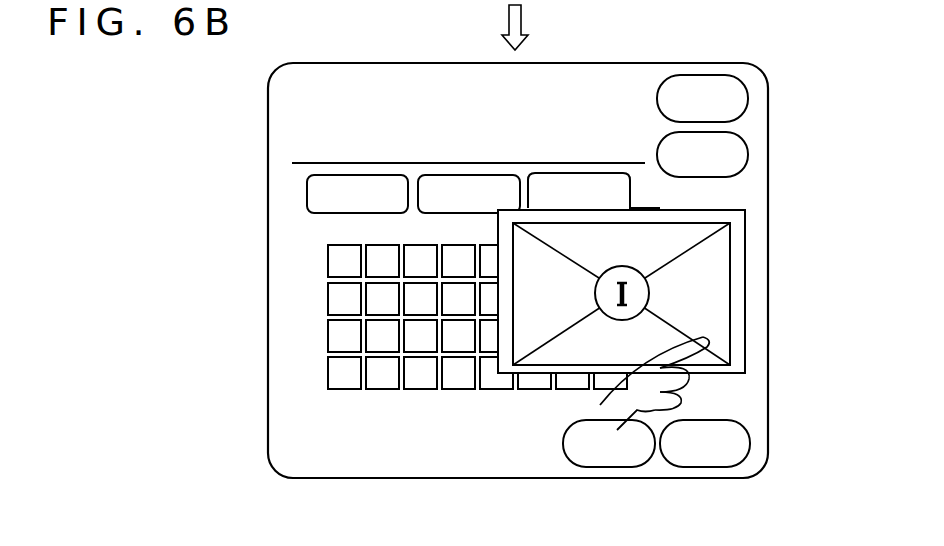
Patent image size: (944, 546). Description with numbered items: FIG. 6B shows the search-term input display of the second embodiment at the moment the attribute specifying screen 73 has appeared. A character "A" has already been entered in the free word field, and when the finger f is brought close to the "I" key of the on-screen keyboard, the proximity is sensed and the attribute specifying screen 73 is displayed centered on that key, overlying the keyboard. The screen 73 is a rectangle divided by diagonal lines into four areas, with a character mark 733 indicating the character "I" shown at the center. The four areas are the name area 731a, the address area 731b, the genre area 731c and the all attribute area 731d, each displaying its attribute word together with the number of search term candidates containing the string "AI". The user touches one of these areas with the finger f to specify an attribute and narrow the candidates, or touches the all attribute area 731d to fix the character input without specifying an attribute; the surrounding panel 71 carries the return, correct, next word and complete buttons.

The display screen (touch panel) 71 is at (768, 128).
The attribute specifying screen 73 is at (745, 333).
The name area 731a is at (726, 289).
The address area 731b is at (675, 234).
The genre area 731c is at (530, 330).
The all attribute area 731d is at (580, 342).
The character mark 733 is at (645, 273).
The finger f is at (542, 0).